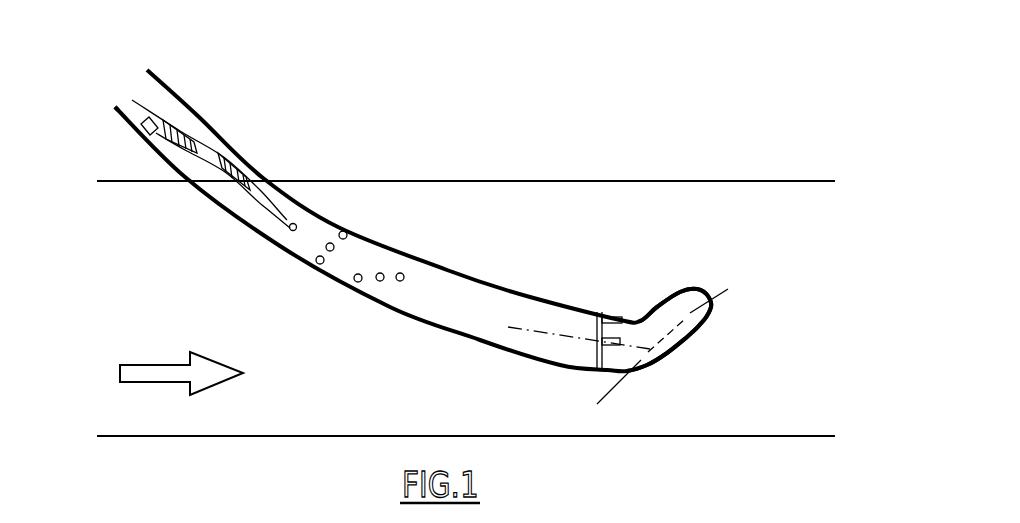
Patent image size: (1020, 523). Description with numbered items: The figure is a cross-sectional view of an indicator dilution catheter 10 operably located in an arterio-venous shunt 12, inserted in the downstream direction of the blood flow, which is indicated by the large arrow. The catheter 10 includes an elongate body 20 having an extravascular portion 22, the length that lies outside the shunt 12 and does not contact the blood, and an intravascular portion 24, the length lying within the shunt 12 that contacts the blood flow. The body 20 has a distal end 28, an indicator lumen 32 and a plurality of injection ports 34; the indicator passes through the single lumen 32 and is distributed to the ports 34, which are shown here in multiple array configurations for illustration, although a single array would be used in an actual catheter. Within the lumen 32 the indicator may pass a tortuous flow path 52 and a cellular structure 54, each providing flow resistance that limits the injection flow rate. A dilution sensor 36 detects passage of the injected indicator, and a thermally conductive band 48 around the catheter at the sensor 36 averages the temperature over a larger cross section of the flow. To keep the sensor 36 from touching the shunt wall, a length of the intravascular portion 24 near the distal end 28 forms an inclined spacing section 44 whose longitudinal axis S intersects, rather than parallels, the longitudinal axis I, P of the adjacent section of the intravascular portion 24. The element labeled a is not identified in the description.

The indicator dilution catheter 10 is at (117, 66).
The arterio-venous shunt 12 is at (737, 181).
The elongate body 20 is at (160, 152).
The extravascular portion 22 is at (311, 121).
The intravascular portion 24 is at (330, 152).
The distal end 28 is at (710, 317).
The indicator lumen 32 is at (132, 100).
The injection ports 34 is at (318, 261).
The sensor 36 is at (598, 320).
The inclined spacing section 44 is at (712, 342).
The thermally conductive band 48 is at (587, 360).
The tortuous flow path 52 is at (194, 118).
The cellular structure 54 is at (224, 195).
The inlet block a is at (141, 130).
The longitudinal axis IP I is at (572, 330).
The longitudinal axis S— S is at (665, 346).
The longitudinal axis IP P is at (672, 359).